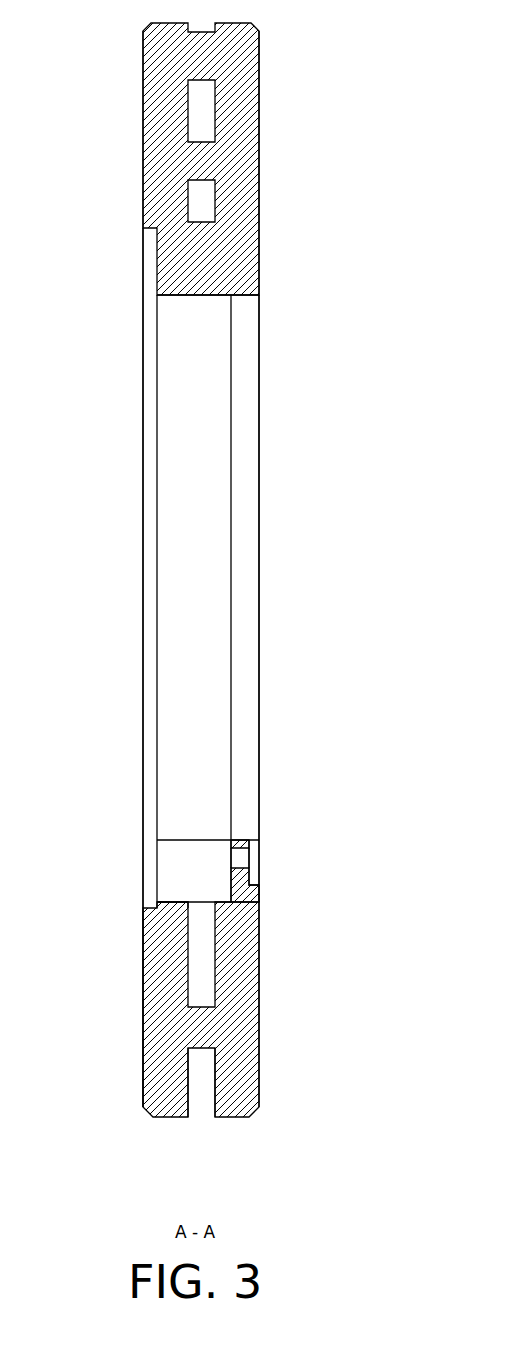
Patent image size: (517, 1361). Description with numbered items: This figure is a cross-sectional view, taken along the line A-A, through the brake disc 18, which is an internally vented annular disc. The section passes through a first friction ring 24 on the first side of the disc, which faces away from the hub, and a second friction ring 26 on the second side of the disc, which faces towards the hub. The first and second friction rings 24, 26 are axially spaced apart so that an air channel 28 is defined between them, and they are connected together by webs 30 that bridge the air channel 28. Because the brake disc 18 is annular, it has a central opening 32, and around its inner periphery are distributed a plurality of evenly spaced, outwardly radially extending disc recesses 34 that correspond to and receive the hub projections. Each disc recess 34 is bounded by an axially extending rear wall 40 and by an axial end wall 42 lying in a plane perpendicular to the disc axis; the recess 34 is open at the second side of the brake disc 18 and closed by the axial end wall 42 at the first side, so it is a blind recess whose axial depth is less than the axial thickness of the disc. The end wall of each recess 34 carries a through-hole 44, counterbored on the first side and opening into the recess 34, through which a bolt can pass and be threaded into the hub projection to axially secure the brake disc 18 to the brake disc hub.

The brake disc 18 is at (196, 1137).
The first friction ring 24 is at (240, 993).
The second friction ring 26 is at (147, 992).
The air channel 28 is at (205, 1084).
The webs 30 is at (204, 165).
The central opening 32 is at (210, 637).
The disc recesses 34 is at (170, 860).
The rear wall 40 is at (168, 900).
The axial end wall 42 is at (232, 888).
The through-hole 44 is at (254, 858).